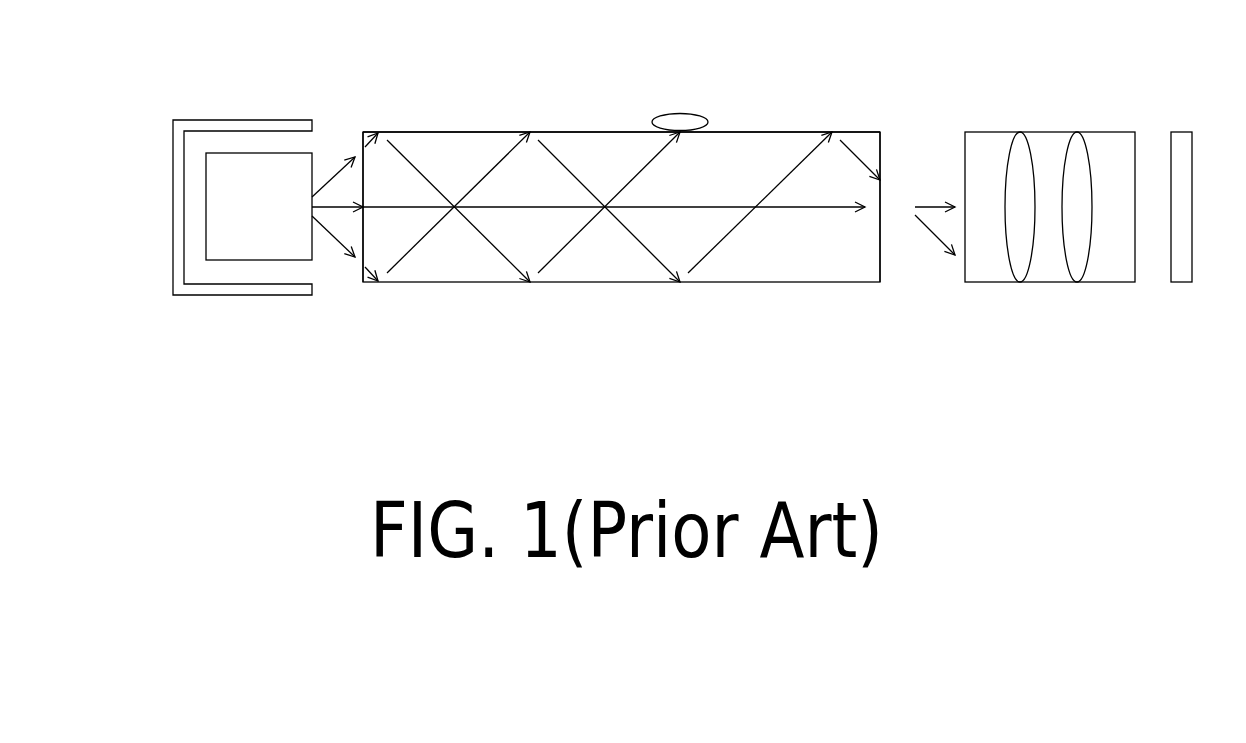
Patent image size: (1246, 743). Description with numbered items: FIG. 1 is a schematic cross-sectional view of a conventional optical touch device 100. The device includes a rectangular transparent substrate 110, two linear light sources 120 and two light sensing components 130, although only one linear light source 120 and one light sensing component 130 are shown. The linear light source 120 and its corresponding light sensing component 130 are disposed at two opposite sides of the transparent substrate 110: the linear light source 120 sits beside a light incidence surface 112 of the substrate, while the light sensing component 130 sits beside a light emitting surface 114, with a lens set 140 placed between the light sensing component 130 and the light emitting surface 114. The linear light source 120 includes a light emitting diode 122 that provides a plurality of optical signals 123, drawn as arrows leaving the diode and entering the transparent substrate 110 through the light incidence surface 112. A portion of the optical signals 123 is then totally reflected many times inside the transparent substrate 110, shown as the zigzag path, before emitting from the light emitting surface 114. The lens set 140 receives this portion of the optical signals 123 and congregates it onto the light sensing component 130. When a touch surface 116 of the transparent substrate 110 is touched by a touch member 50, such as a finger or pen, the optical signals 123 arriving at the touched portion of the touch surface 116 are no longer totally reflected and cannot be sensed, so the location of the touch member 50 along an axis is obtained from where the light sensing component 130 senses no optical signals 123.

The conventional optical touch device 100 is at (1237, 483).
The transparent substrate 110 is at (780, 272).
The light incidence surface 112 is at (362, 133).
The light emitting surface 114 is at (881, 268).
The touch surface 116 is at (498, 130).
The linear light source 120 is at (240, 98).
The light emitting diode 122 is at (217, 202).
The optical signals 123 is at (331, 237).
The light sensing component 130 is at (1178, 140).
The lens set 140 is at (1055, 283).
The touch member 50 is at (678, 116).